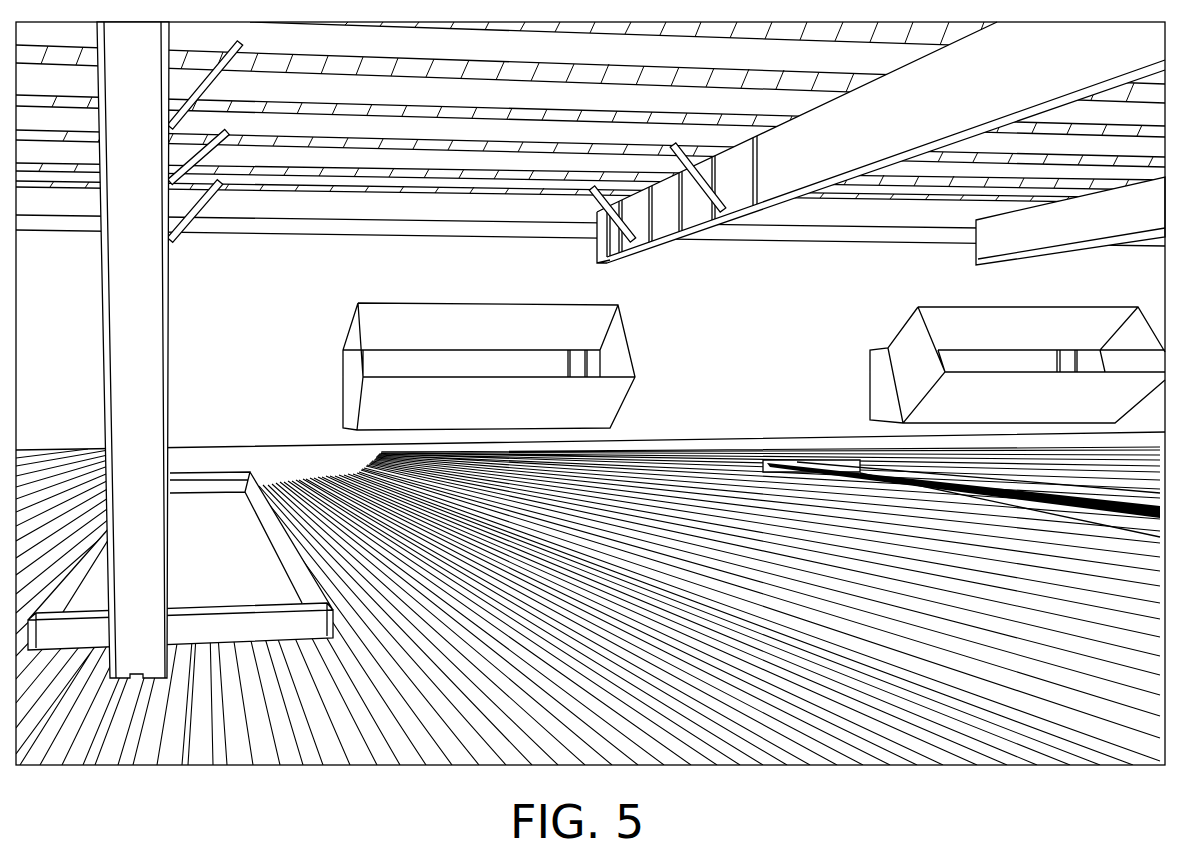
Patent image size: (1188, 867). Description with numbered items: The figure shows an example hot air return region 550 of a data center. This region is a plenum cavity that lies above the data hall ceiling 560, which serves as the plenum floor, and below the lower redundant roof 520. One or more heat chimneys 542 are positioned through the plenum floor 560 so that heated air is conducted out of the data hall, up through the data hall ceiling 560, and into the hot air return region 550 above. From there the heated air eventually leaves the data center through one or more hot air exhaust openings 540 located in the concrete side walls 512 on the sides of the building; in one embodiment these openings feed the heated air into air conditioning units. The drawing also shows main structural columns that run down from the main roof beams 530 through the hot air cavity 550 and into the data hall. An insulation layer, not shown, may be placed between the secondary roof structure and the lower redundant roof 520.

The concrete side walls 512 is at (418, 284).
The lower redundant roof 520 is at (878, 37).
The main roof beams 530 is at (893, 160).
The hot air exhaust openings 540 is at (490, 362).
The heat chimneys 542 is at (876, 467).
The hot air return region 550 is at (868, 790).
The data hall ceiling 560 is at (337, 460).